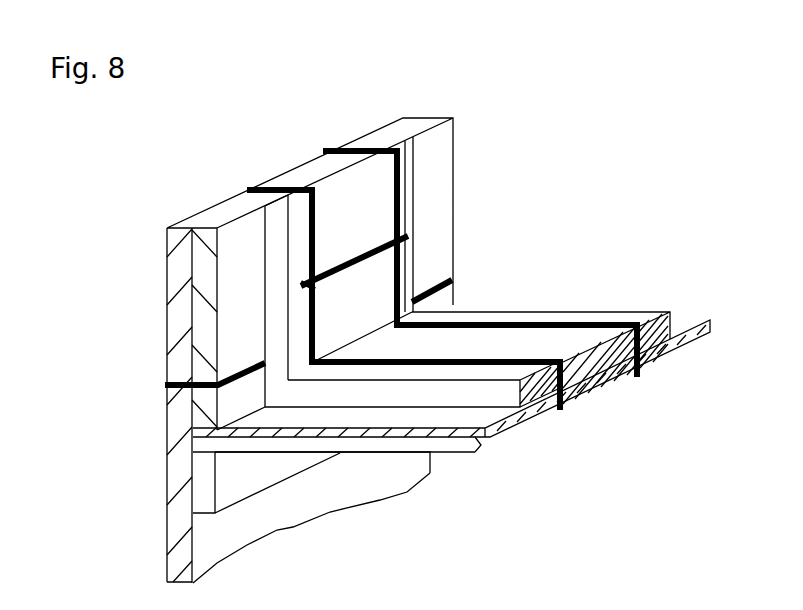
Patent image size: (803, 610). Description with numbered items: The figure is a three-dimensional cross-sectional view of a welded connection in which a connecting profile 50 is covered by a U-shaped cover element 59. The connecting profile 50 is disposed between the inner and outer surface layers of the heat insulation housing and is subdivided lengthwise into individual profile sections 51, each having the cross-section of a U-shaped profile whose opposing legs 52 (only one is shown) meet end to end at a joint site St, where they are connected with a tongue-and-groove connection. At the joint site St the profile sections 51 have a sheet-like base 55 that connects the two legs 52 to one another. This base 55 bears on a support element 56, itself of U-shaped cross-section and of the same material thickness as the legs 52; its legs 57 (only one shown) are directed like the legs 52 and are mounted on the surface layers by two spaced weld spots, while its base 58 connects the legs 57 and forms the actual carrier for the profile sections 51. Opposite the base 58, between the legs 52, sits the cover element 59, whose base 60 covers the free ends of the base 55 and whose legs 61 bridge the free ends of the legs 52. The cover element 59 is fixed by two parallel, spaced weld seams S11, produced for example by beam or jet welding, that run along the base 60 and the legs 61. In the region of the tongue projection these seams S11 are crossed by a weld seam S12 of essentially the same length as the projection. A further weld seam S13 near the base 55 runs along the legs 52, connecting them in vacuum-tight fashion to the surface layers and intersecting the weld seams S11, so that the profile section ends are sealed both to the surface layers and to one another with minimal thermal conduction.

The connecting profile 50 is at (222, 217).
The profile section 51 is at (180, 333).
The leg 52 is at (232, 272).
The base 55 is at (185, 455).
The support element 56 is at (456, 482).
The leg of support element 57 is at (208, 490).
The base of support element 58 is at (370, 443).
The cover element 59 is at (470, 296).
The base of cover element 60 is at (507, 388).
The leg of cover element 61 is at (409, 255).
The weld seam S11 is at (258, 186).
The weld seam S12 is at (360, 266).
The weld seam S13 is at (170, 398).
The joint site St is at (598, 390).